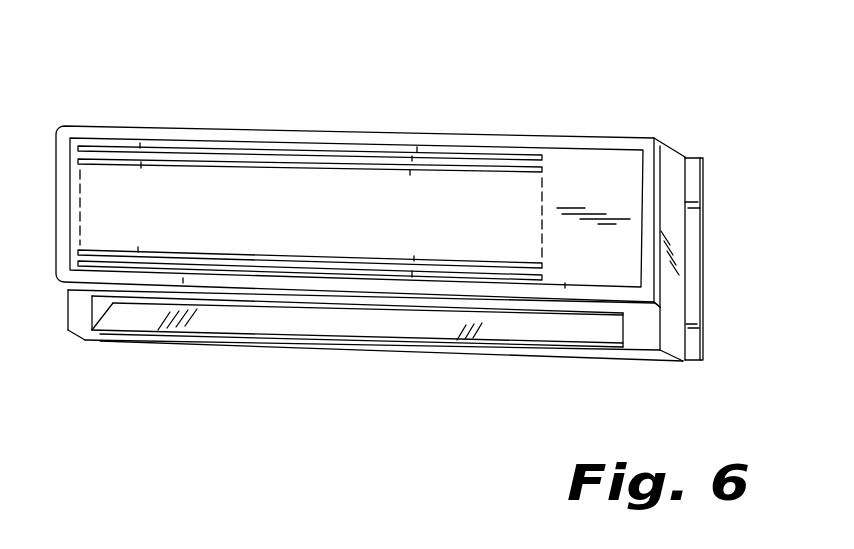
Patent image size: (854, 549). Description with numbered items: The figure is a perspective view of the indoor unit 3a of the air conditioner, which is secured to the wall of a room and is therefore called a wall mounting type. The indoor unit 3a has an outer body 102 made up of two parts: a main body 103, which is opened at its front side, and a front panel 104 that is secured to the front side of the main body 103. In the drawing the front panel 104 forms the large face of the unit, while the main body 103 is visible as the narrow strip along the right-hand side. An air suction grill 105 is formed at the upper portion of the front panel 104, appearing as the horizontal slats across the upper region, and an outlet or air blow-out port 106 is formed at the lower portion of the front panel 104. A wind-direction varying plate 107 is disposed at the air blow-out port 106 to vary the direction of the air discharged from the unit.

The indoor unit 3a is at (110, 106).
The outer body 102 is at (404, 207).
The main body 103 is at (693, 158).
The front panel 104 is at (675, 158).
The air suction grill 105 is at (222, 163).
The outlet (air blow-out) port 106 is at (228, 338).
The wind-direction varying plate 107 is at (327, 320).